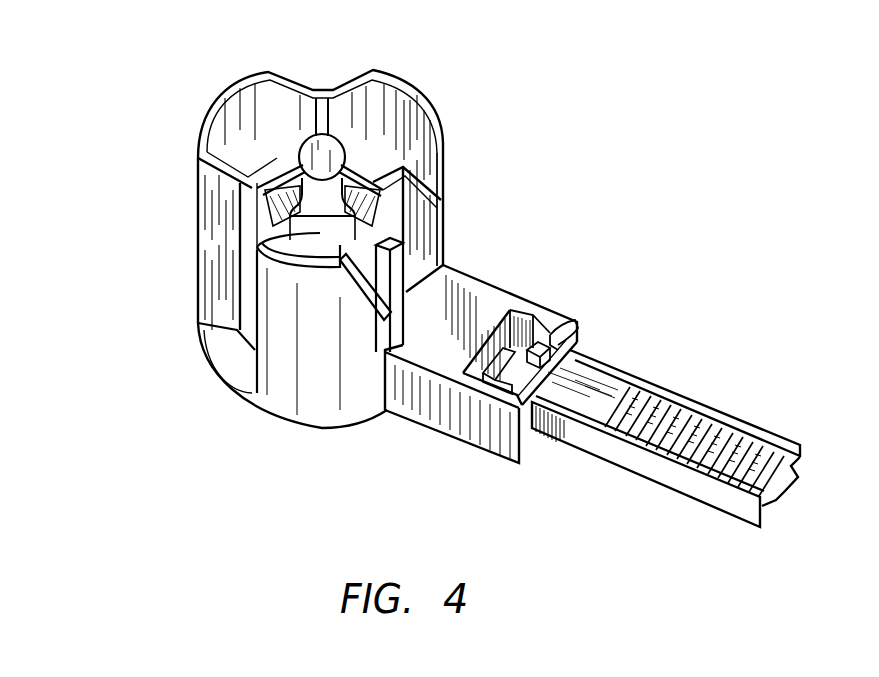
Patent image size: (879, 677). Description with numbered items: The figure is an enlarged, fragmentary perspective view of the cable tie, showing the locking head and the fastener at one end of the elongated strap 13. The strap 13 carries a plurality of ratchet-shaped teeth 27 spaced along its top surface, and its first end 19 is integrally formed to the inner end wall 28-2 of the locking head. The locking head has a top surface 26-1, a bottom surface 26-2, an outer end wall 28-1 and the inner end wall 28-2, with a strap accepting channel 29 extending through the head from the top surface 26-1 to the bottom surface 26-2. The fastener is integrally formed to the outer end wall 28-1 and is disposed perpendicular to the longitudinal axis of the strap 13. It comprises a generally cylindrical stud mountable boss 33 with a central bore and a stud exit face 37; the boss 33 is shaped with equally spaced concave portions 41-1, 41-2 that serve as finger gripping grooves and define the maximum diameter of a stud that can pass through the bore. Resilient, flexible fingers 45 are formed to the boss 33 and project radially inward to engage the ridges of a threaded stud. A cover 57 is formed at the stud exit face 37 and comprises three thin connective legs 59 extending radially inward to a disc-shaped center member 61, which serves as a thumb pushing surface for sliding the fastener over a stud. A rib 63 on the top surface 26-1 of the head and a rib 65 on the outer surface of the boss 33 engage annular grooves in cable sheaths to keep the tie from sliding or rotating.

The elongated strap 13 is at (667, 476).
The first end 19 is at (550, 433).
The top surface 26-1 is at (480, 290).
The bottom surface 26-2 is at (463, 443).
The ratchet-shaped teeth 27 is at (716, 430).
The outer end wall 28-1 is at (387, 403).
The inner end wall 28-2 is at (578, 347).
The strap accepting channel 29 is at (517, 320).
The stud mountable boss 33 is at (207, 223).
The stud exit face 37 is at (404, 94).
The concave portion 41-1 is at (245, 308).
The concave portion 41-2 is at (330, 90).
The resilient, flexible fingers 45 is at (378, 222).
The cover 57 is at (298, 146).
The connective legs 59 is at (322, 112).
The center member 61 is at (338, 158).
The rib 63 is at (563, 328).
The rib 65 is at (393, 283).